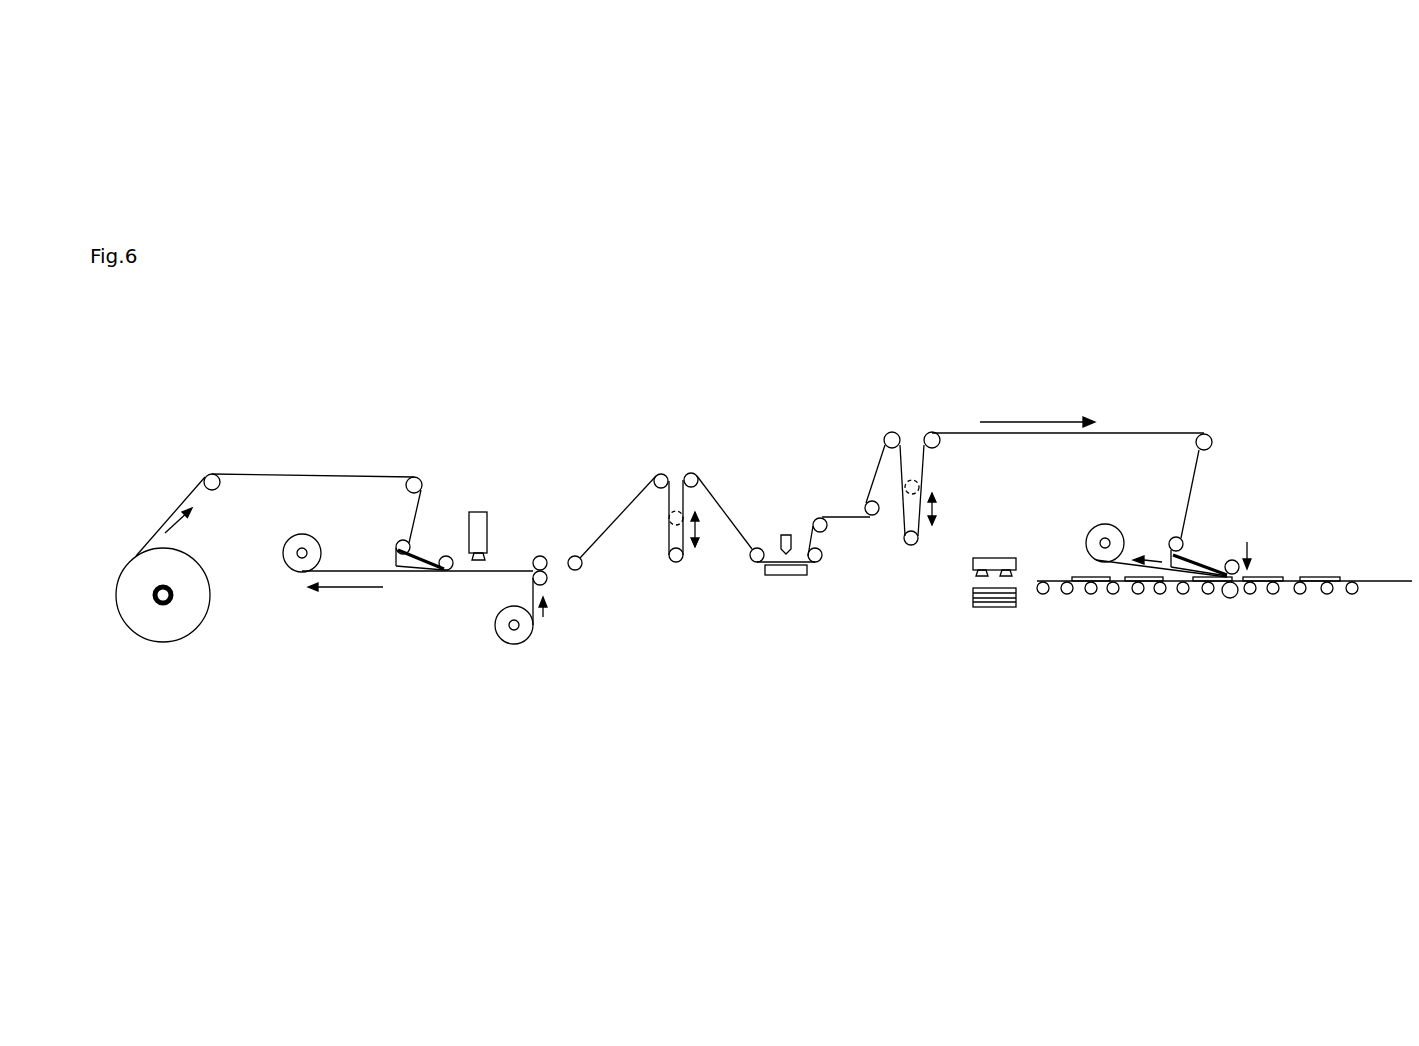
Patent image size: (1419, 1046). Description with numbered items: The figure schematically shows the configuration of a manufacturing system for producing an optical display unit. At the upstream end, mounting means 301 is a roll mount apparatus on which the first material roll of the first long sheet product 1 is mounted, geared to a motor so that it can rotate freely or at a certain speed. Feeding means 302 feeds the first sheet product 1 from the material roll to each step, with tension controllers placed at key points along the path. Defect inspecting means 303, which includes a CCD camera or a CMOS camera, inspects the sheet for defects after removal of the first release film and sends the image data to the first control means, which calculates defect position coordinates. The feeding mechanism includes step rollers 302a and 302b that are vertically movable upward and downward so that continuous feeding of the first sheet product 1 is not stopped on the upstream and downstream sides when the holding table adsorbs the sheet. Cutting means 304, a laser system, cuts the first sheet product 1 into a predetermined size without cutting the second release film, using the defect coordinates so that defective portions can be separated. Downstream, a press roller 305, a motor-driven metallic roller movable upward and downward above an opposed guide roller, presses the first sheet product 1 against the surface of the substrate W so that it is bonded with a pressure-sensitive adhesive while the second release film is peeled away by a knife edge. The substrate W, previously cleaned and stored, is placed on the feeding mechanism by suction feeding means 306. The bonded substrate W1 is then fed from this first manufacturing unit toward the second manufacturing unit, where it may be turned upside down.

The first sheet product 1 is at (165, 525).
The mounting means 301 is at (156, 597).
The feeding means 302 is at (207, 463).
The step roller 302a is at (676, 570).
The step roller 302b is at (911, 554).
The defect inspecting means 303 is at (482, 512).
The cutting means 304 is at (786, 532).
The press roller 305 is at (1230, 558).
The suction feeding means 306 is at (993, 558).
The substrate W is at (998, 622).
The substrate W1 is at (1332, 567).